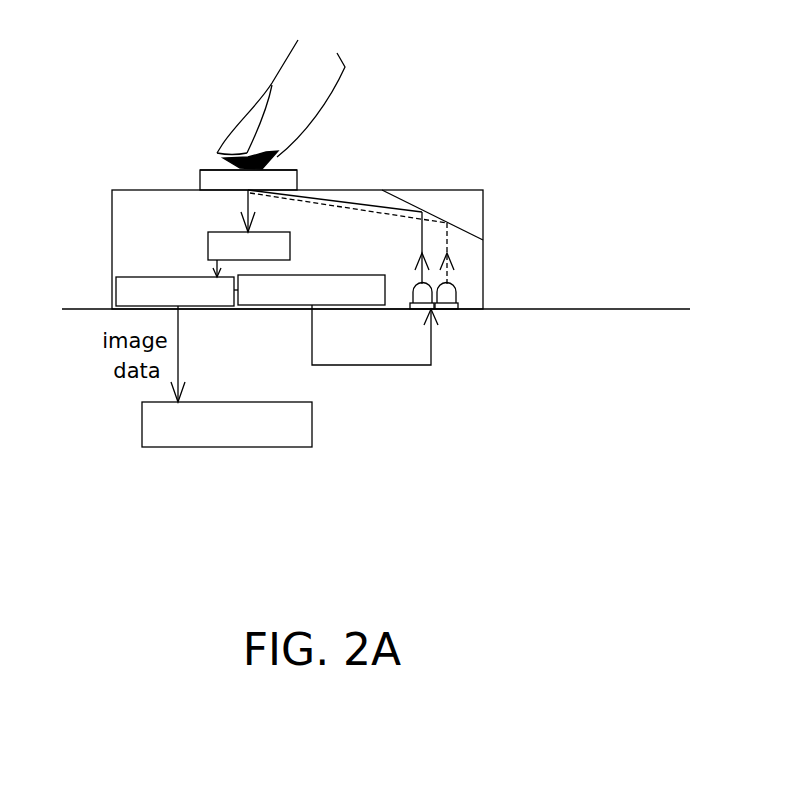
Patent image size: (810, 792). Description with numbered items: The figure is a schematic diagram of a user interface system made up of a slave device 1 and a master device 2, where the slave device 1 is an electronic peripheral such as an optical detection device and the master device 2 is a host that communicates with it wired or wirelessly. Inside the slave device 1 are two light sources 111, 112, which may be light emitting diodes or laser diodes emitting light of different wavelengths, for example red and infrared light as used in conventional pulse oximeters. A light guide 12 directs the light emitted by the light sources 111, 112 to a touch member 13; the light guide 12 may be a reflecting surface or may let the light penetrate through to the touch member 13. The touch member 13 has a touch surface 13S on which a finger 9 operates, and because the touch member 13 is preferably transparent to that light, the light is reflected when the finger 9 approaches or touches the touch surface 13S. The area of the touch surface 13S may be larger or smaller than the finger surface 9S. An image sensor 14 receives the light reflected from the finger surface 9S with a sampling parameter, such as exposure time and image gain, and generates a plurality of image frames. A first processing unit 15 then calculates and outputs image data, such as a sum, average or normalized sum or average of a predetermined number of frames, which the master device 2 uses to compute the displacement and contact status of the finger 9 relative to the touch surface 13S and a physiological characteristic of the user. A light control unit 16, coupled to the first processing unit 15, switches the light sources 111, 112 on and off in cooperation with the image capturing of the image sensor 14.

The slave device 1 is at (512, 161).
The master device 2 is at (142, 425).
The finger 9 is at (282, 65).
The finger surface 9S is at (233, 163).
The light guide 12 is at (463, 217).
The touch member 13 is at (198, 178).
The touch surface 13S is at (292, 169).
The image sensor 14 is at (208, 243).
The first processing unit 15 is at (116, 288).
The light control unit 16 is at (278, 306).
The light source 111 is at (413, 298).
The light source 112 is at (456, 298).